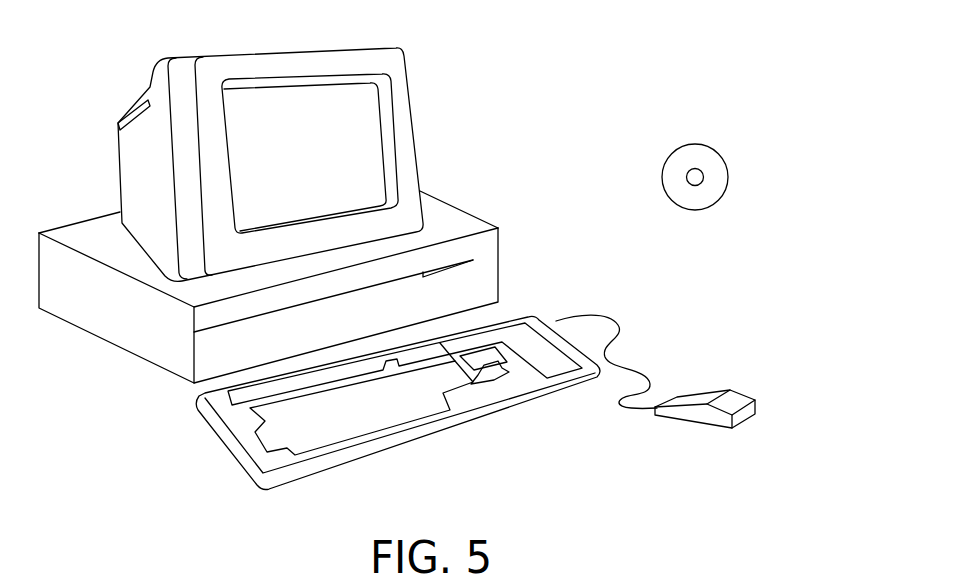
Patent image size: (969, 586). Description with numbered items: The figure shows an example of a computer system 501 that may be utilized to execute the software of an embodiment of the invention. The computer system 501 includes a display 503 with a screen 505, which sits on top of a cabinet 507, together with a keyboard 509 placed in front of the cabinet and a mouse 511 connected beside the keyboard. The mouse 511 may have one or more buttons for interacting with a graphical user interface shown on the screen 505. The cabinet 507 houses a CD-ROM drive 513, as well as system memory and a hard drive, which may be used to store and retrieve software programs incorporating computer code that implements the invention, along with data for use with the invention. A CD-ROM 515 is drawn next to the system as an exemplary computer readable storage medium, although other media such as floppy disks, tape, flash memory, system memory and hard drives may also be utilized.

The computer system 501 is at (616, 26).
The display 503 is at (417, 165).
The screen 505 is at (377, 117).
The cabinet 507 is at (160, 368).
The keyboard 509 is at (403, 443).
The mouse 511 is at (745, 397).
The CD-ROM drive 513 is at (475, 262).
The CD-ROM 515 is at (712, 147).